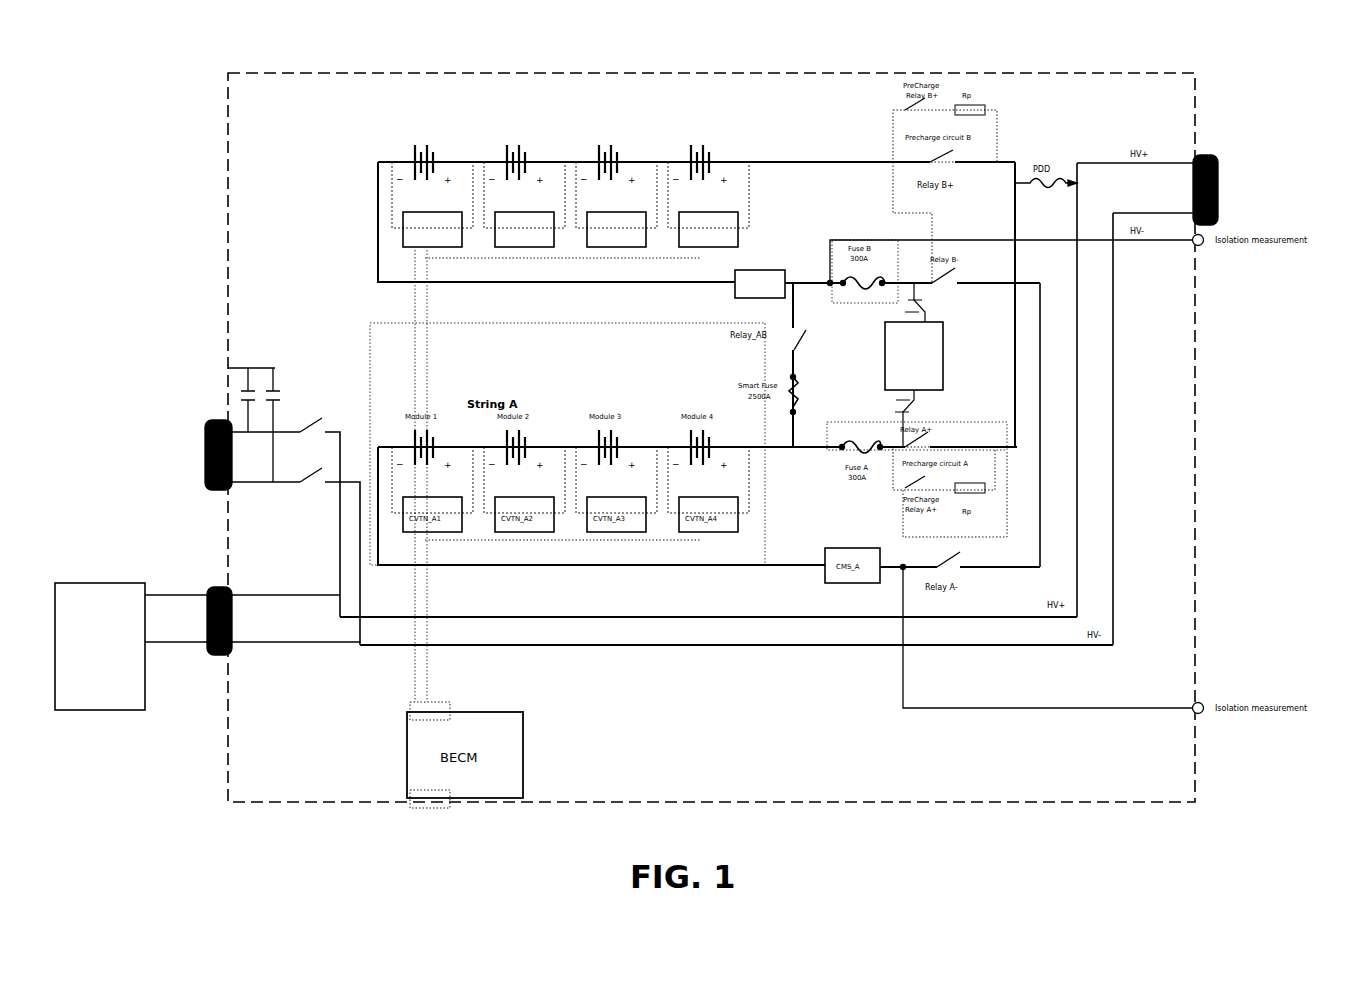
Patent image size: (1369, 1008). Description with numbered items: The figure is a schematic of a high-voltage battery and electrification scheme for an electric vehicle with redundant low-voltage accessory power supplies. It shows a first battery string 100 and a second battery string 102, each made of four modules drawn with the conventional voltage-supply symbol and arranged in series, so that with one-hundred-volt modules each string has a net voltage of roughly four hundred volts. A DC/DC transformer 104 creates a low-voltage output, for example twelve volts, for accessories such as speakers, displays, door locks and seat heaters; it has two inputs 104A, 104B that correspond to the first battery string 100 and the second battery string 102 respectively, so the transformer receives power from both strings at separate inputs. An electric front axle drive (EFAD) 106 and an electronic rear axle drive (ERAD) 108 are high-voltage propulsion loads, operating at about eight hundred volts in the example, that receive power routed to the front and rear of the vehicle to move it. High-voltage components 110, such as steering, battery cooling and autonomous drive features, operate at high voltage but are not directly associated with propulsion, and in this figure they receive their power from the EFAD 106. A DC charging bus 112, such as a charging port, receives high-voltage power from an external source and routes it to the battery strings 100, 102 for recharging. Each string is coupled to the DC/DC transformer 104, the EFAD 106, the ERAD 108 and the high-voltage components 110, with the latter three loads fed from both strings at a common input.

The first battery string 100 is at (460, 383).
The second battery string 102 is at (503, 100).
The DC/DC transformer 104 is at (952, 340).
The input of DC/DC transformer 104A is at (920, 400).
The input of DC/DC transformer 104B is at (925, 310).
The electric front axle drive (EFAD) 106 is at (218, 585).
The electronic rear axle drive (ERAD) 108 is at (1200, 150).
The high-voltage components 110 is at (80, 573).
The DC charging bus 112 is at (205, 432).